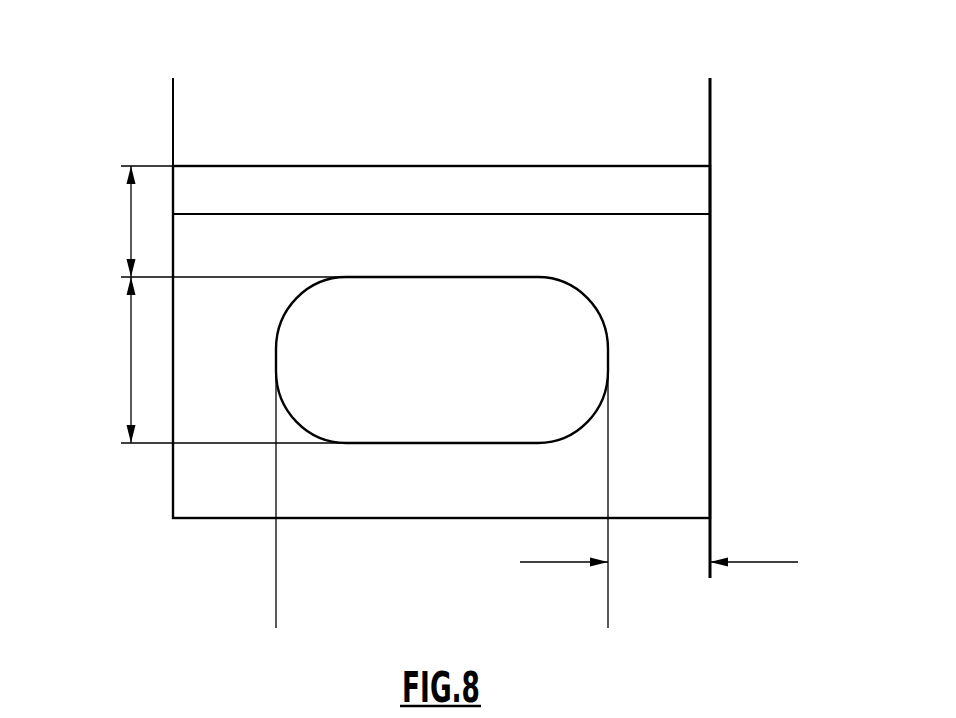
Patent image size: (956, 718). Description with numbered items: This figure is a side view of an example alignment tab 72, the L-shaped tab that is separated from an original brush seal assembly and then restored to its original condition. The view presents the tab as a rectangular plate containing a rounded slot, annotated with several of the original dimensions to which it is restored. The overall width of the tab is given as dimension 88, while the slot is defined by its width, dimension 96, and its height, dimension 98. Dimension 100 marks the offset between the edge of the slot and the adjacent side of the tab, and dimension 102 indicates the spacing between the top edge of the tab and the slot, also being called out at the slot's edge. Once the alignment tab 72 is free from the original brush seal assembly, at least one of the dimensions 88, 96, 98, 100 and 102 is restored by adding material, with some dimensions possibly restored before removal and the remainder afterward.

The alignment tab 72 is at (545, 87).
The original dimension 88 is at (710, 122).
The original dimension 96 is at (608, 619).
The original dimension 98 is at (131, 360).
The original dimension 100 is at (762, 562).
The original dimension 102 is at (131, 228).